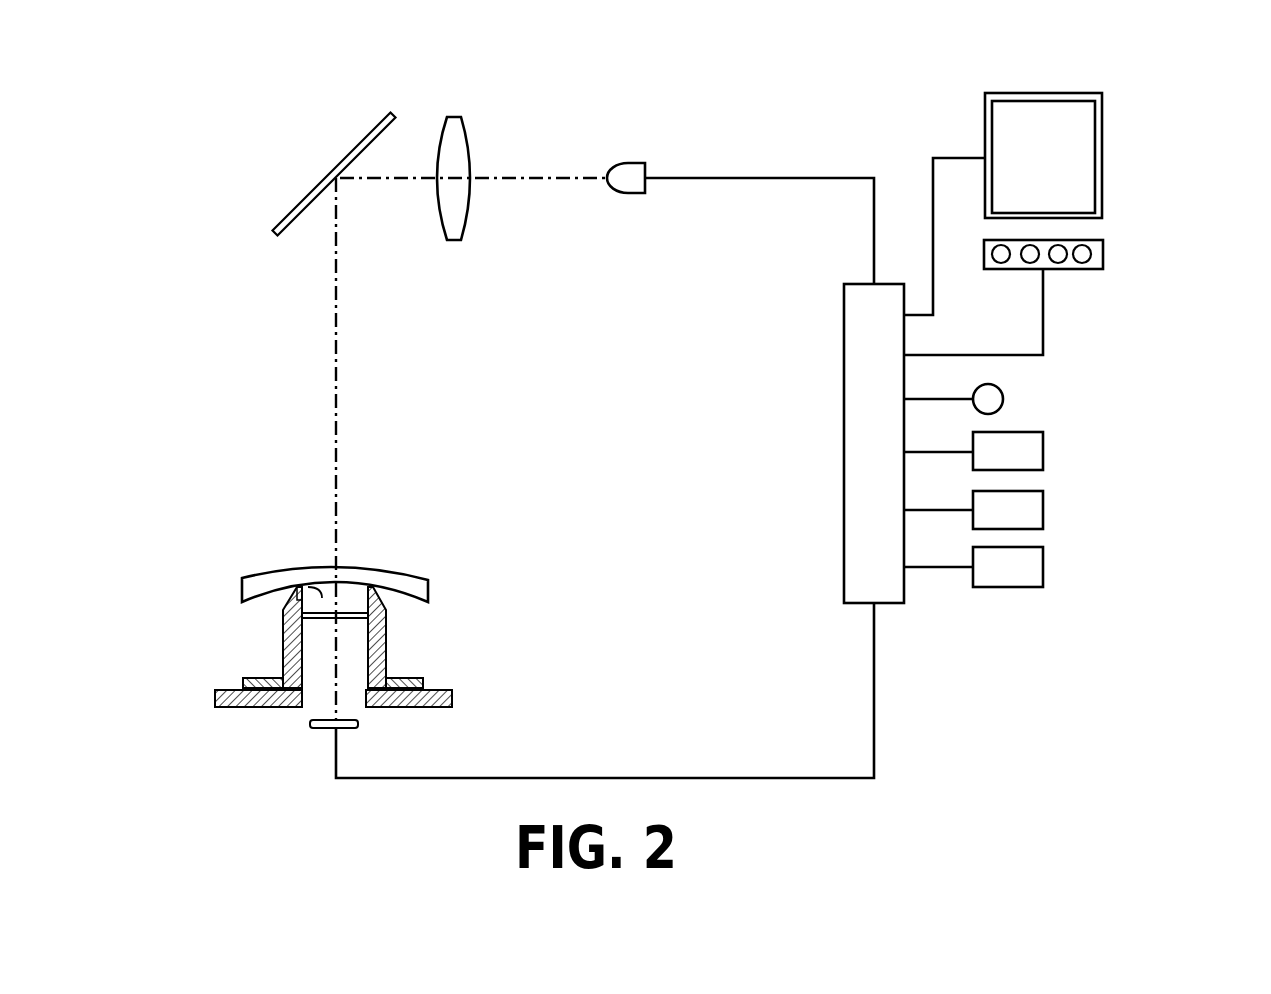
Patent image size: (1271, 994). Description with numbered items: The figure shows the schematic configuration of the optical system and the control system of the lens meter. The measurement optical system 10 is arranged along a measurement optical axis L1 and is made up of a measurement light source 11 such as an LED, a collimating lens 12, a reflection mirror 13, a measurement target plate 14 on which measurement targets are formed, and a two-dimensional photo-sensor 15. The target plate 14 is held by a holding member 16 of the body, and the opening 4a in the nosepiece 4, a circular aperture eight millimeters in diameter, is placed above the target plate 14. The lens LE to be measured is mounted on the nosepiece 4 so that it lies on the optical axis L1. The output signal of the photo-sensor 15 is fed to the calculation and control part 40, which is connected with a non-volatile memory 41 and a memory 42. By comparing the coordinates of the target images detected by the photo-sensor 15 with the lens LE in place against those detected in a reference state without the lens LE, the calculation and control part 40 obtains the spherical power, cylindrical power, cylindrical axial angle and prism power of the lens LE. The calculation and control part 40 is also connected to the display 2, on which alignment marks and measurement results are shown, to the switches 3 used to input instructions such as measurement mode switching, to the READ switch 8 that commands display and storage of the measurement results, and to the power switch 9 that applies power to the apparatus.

The display 2 is at (1103, 145).
The switches 3 is at (1099, 251).
The nosepiece 4 is at (390, 623).
The opening 4a is at (296, 588).
The READ switch 8 is at (1003, 398).
The power switch 9 is at (1043, 567).
The measurement optical system 10 is at (512, 467).
The measurement light source 11 is at (630, 173).
The collimating lens 12 is at (458, 117).
The reflection mirror 13 is at (370, 132).
The measurement target plate 14 is at (390, 650).
The two-dimensional photo-sensor 15 is at (312, 733).
The holding member 16 is at (302, 695).
The calculation and control part 40 is at (844, 343).
The non-volatile memory 41 is at (1043, 452).
The memory 42 is at (1043, 510).
The measurement optical axis L1 is at (336, 422).
The lens LE is at (392, 572).